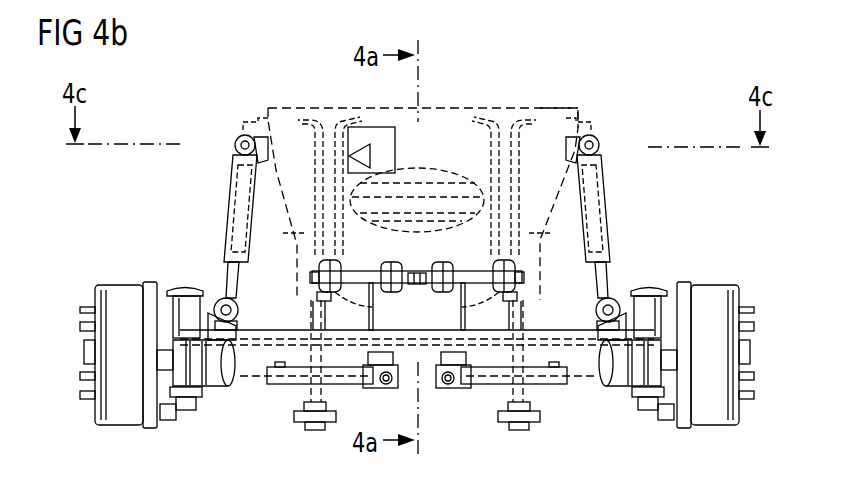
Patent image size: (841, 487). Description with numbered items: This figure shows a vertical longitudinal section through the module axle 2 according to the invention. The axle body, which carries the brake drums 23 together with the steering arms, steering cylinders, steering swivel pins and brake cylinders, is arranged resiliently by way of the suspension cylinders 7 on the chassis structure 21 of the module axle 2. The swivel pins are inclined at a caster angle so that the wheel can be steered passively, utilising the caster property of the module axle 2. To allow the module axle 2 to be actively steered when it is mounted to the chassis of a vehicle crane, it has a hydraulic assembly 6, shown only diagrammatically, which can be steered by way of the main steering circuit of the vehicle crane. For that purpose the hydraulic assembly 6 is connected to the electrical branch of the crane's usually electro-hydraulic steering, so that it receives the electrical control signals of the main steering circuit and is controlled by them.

The module axle 2 is at (76, 254).
The hydraulic assembly 6 is at (378, 138).
The suspension cylinder 7 is at (612, 183).
The chassis structure 21 is at (553, 122).
The brake drum 23 is at (715, 294).